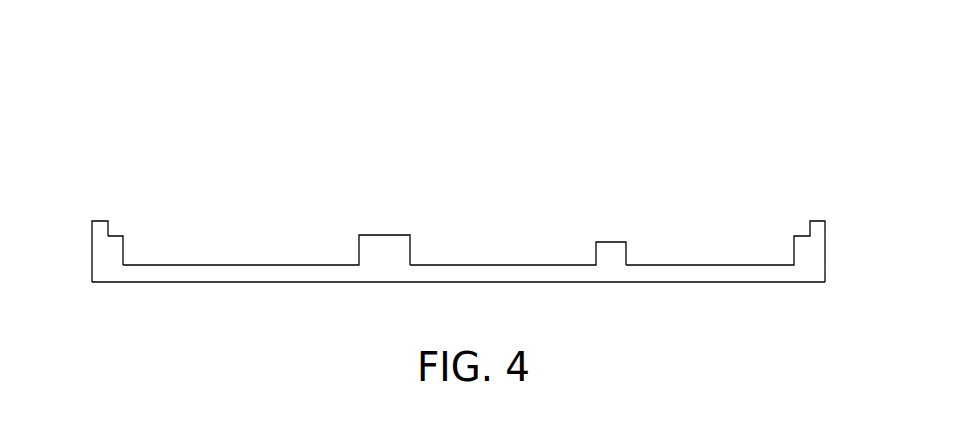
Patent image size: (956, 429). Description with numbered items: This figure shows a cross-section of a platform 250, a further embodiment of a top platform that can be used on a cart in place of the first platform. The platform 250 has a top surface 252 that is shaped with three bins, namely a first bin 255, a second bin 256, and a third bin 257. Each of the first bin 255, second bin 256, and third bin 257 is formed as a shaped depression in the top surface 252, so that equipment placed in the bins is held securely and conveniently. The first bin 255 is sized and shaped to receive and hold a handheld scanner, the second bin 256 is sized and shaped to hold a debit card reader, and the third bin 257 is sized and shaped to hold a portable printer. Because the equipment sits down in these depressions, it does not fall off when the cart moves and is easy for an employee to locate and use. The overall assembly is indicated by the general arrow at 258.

The platform 250 is at (103, 248).
The top surface 252 is at (115, 232).
The first bin 255 is at (278, 265).
The second bin 256 is at (510, 265).
The third bin 257 is at (703, 265).
The spacer body 258 is at (433, 126).